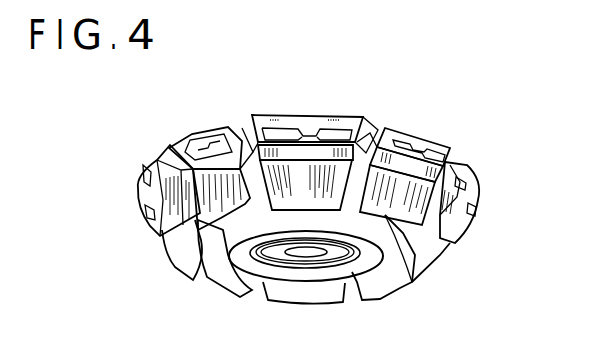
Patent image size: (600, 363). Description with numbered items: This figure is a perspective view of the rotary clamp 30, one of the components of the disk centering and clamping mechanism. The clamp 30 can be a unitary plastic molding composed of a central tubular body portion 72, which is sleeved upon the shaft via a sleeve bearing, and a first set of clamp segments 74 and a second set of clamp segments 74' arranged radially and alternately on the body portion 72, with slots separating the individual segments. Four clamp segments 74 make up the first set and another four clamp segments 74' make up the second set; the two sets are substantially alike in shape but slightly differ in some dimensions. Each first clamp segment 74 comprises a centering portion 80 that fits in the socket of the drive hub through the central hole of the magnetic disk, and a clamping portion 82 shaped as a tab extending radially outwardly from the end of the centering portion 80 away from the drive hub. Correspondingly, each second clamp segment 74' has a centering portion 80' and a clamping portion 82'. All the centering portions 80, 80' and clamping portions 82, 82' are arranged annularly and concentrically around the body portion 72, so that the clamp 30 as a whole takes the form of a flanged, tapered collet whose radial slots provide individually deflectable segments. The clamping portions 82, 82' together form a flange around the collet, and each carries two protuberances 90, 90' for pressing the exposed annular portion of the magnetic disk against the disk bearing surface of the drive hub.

The rotary clamp 30 is at (452, 124).
The central tubular body portion 72 is at (377, 260).
The first set of clamp segments 74 is at (341, 203).
The second set of clamp segments 74' is at (335, 187).
The centering portion 80 is at (153, 202).
The centering portion 80' is at (403, 151).
The clamping portion 82 is at (198, 164).
The clamping portion 82' is at (305, 143).
The protuberances 90 is at (205, 125).
The protuberances 90' is at (307, 107).